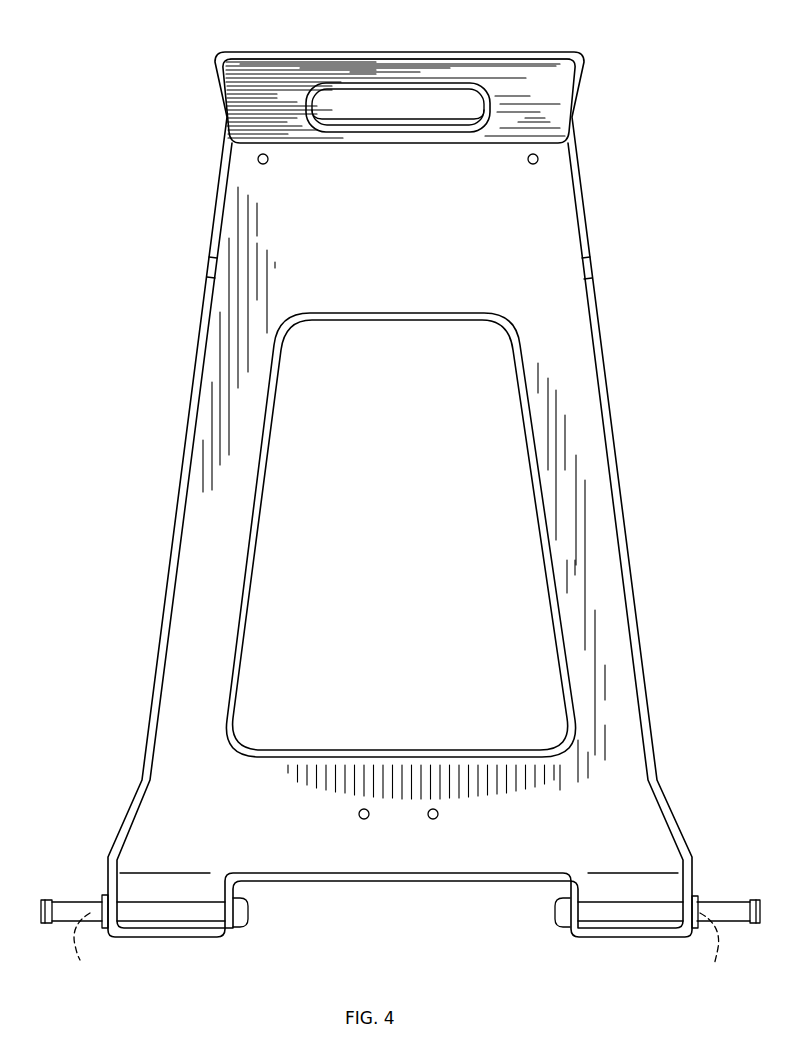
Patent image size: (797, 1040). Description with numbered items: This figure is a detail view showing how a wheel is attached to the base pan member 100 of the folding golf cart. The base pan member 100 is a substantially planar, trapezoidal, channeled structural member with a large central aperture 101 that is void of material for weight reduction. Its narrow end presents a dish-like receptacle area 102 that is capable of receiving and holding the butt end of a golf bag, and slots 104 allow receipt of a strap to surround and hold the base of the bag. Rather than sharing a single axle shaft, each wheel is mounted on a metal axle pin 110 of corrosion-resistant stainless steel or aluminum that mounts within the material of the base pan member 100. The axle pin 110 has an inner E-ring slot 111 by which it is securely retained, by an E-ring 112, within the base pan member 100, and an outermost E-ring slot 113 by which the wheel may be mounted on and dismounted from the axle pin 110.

The base pan member 100 is at (589, 225).
The central aperture 101 is at (480, 448).
The receptacle area 102 is at (539, 64).
The slots 104 is at (590, 268).
The axle pin 110 is at (172, 912).
The inner E-ring slot 111 is at (402, 955).
The E-ring 112 is at (105, 930).
The outermost E-ring slot 113 is at (55, 922).